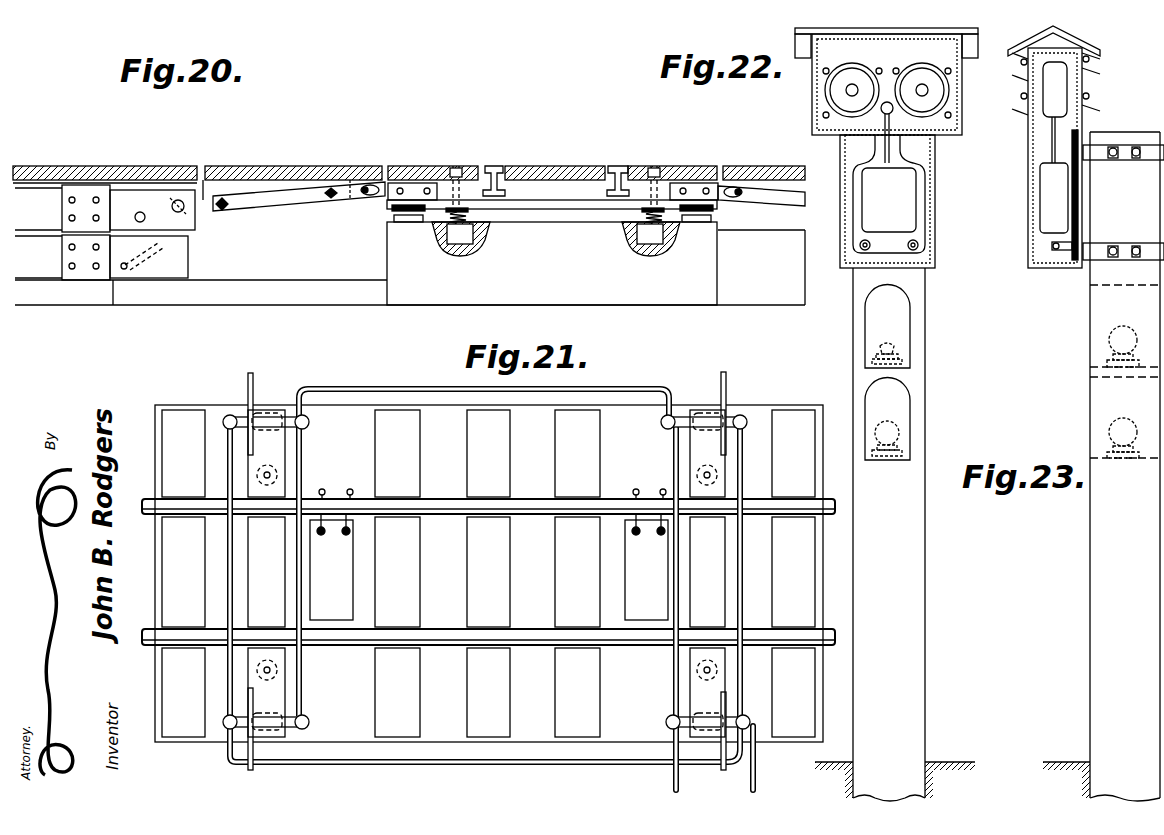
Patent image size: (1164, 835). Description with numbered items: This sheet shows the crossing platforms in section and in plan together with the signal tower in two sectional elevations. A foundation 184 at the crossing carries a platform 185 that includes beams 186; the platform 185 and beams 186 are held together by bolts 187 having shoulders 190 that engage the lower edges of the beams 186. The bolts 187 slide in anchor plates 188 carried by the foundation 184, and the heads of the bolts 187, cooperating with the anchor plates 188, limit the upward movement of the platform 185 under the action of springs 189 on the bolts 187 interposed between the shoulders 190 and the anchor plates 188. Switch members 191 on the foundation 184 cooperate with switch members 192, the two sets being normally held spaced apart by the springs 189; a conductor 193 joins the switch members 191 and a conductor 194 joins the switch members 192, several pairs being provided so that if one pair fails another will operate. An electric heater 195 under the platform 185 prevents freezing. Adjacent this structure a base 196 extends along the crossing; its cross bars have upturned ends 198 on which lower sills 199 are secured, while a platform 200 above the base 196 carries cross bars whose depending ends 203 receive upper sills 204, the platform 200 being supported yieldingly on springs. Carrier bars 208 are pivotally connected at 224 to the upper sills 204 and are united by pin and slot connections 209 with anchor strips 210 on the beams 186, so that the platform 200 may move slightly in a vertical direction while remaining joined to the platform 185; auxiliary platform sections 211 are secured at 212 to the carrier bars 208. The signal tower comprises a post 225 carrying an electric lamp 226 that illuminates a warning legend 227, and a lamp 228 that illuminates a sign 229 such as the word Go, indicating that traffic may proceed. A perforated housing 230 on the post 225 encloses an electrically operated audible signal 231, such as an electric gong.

In FIG. 20, the foundation 184 is at (625, 290).
In FIG. 20, the platform 185 is at (490, 166).
In FIG. 21, the platform 185 is at (488, 572).
In FIG. 20, the beams 186 is at (556, 210).
In FIG. 21, the beams 186 is at (782, 570).
In FIG. 20, the bolts 187 is at (456, 166).
In FIG. 21, the bolts 187 is at (262, 474).
In FIG. 20, the anchor plates 188 is at (462, 257).
In FIG. 20, the springs 189 is at (468, 215).
In FIG. 20, the shoulders 190 is at (450, 213).
In FIG. 20, the switch members 191 is at (392, 224).
In FIG. 21, the switch members 191 is at (310, 422).
In FIG. 20, the switch members 192 is at (392, 209).
In FIG. 21, the switch members 192 is at (247, 410).
In FIG. 21, the conductor 193 is at (388, 388).
In FIG. 21, the conductor 194 is at (228, 597).
In FIG. 21, the electric heater 195 is at (489, 554).
In FIG. 20, the base 196 is at (103, 298).
In FIG. 20, the upturned ends 198 is at (85, 275).
In FIG. 20, the lower sills 199 is at (183, 263).
In FIG. 20, the platform 200 is at (43, 166).
In FIG. 20, the depending ends 203 is at (92, 186).
In FIG. 20, the upper sills 204 is at (142, 195).
In FIG. 20, the carrier bars 208 is at (283, 187).
In FIG. 20, the pin and slot connections 209 is at (377, 183).
In FIG. 20, the anchor strips 210 is at (413, 184).
In FIG. 20, the auxiliary platform sections 211 is at (245, 166).
In FIG. 20, the securing points 212 is at (226, 207).
In FIG. 20, the pivotal connection 224 is at (180, 200).
In FIG. 22, the post 225 is at (915, 580).
In FIG. 23, the post 225 is at (1092, 558).
In FIG. 22, the electric lamp 226 is at (895, 346).
In FIG. 23, the electric lamp 226 is at (1110, 331).
In FIG. 22, the warning legend 227 is at (905, 313).
In FIG. 22, the lamp 228 is at (898, 434).
In FIG. 23, the lamp 228 is at (1110, 436).
In FIG. 22, the sign 229 is at (900, 414).
In FIG. 22, the perforated housing 230 is at (886, 148).
In FIG. 23, the perforated housing 230 is at (1068, 46).
In FIG. 22, the audible signal 231 is at (903, 195).
In FIG. 23, the audible signal 231 is at (1045, 200).